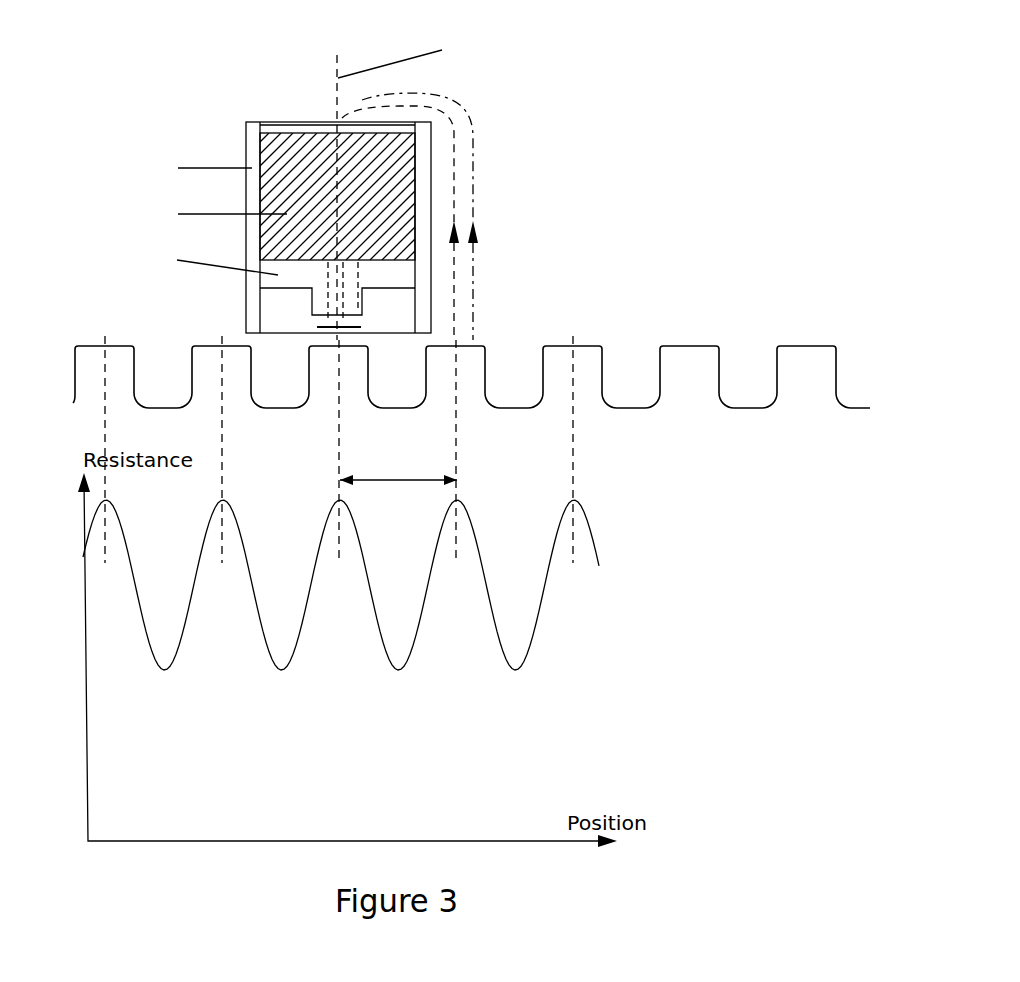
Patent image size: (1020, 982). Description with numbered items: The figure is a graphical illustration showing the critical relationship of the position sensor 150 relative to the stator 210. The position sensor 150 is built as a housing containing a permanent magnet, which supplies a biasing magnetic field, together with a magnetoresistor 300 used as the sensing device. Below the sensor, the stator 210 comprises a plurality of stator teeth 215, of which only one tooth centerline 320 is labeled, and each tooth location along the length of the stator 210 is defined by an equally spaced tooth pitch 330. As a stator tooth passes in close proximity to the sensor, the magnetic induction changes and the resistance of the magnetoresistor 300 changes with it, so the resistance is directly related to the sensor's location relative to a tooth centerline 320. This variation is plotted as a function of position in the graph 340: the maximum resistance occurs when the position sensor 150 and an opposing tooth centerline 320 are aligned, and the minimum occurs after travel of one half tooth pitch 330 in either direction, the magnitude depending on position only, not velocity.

The position sensor 150 is at (301, 121).
The magnetoresistor 300 is at (315, 326).
The stator teeth 215 is at (560, 345).
The stator 210 is at (902, 518).
The tooth centerline 320 is at (580, 437).
The tooth pitch 330 is at (398, 460).
The graph 340 is at (374, 585).